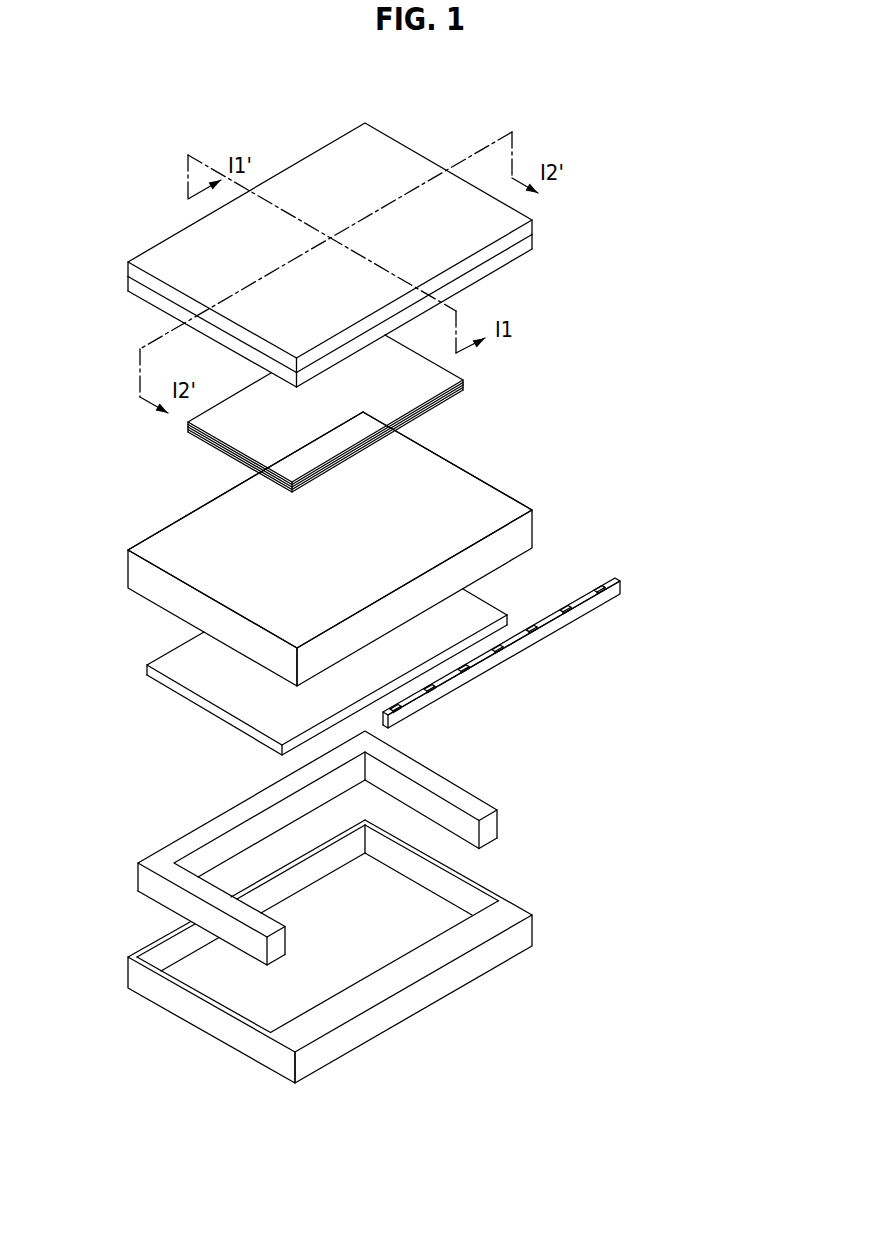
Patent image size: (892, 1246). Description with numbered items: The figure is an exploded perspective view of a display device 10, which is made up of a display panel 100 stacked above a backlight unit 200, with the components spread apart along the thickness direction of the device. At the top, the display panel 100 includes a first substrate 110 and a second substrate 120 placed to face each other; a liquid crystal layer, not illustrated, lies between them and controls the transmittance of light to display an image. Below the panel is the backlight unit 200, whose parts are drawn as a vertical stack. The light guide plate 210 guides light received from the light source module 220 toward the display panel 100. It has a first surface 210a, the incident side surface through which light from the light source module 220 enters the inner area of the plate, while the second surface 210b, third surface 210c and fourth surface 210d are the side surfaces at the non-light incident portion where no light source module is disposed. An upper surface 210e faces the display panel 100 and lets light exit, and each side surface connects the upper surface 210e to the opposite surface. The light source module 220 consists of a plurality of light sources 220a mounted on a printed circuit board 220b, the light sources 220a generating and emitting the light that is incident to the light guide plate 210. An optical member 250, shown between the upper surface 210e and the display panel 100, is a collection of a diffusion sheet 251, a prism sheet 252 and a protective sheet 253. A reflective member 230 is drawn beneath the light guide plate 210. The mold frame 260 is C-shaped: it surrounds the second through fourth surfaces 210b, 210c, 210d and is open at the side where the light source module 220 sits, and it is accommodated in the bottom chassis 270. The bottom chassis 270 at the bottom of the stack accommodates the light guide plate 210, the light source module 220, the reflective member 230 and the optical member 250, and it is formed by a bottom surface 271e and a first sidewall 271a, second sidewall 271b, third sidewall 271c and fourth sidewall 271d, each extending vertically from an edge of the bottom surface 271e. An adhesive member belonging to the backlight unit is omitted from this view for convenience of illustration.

The display device 10 is at (124, 146).
The display panel 100 is at (390, 255).
The first substrate 110 is at (533, 242).
The second substrate 120 is at (533, 222).
The backlight unit 200 is at (746, 848).
The light guide plate 210 is at (350, 547).
The first surface 210a is at (514, 537).
The second surface 210b is at (194, 504).
The third surface 210c is at (500, 476).
The fourth surface 210d is at (184, 603).
The upper surface 210e is at (426, 492).
The light source module 220 is at (560, 633).
The light source 220a is at (600, 584).
The printed circuit board 220b is at (618, 588).
The reflective member 230 is at (477, 608).
The optical member 250 is at (387, 413).
The diffusion sheet 251 is at (463, 389).
The prism sheet 252 is at (463, 386).
The protective sheet 253 is at (462, 383).
The mold frame 260 is at (470, 779).
The bottom chassis 270 is at (335, 951).
The first sidewall 271a is at (445, 988).
The second sidewall 271b is at (141, 942).
The third sidewall 271c is at (489, 876).
The fourth sidewall 271d is at (189, 1006).
The bottom surface 271e is at (353, 946).